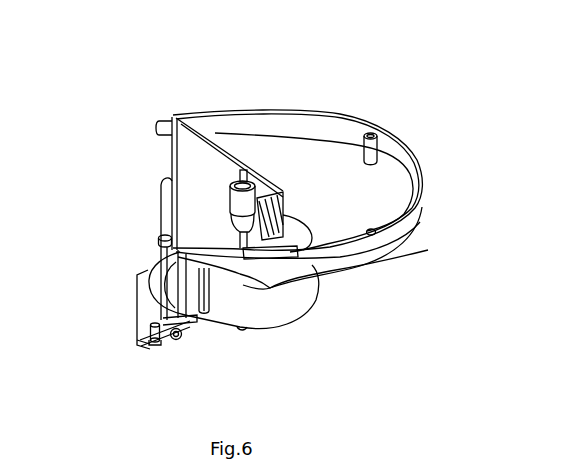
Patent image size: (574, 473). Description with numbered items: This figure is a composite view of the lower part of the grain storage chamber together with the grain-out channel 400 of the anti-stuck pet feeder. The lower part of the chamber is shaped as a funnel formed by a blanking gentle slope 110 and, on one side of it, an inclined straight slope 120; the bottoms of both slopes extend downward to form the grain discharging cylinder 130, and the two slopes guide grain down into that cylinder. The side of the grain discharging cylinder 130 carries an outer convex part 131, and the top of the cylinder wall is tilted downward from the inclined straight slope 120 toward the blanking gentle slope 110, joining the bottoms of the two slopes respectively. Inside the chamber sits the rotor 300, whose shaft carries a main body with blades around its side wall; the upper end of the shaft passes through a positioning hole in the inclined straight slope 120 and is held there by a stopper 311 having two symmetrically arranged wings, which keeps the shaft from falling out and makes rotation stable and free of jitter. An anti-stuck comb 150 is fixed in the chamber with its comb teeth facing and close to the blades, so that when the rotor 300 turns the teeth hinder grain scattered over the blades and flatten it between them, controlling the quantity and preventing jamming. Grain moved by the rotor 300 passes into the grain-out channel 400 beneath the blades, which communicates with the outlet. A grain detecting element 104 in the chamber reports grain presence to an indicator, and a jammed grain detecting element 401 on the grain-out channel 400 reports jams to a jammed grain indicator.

The blanking gentle slope 110 is at (200, 188).
The inclined straight slope 120 is at (377, 181).
The stopper 311 is at (250, 196).
The rotor 300 is at (283, 233).
The anti-stuck comb 150 is at (208, 226).
The outer convex part 131 is at (157, 268).
The grain discharging cylinder 130 is at (270, 305).
The grain detecting element 104 is at (380, 262).
The grain-out channel 400 is at (160, 306).
The jammed grain detecting element 401 is at (178, 342).